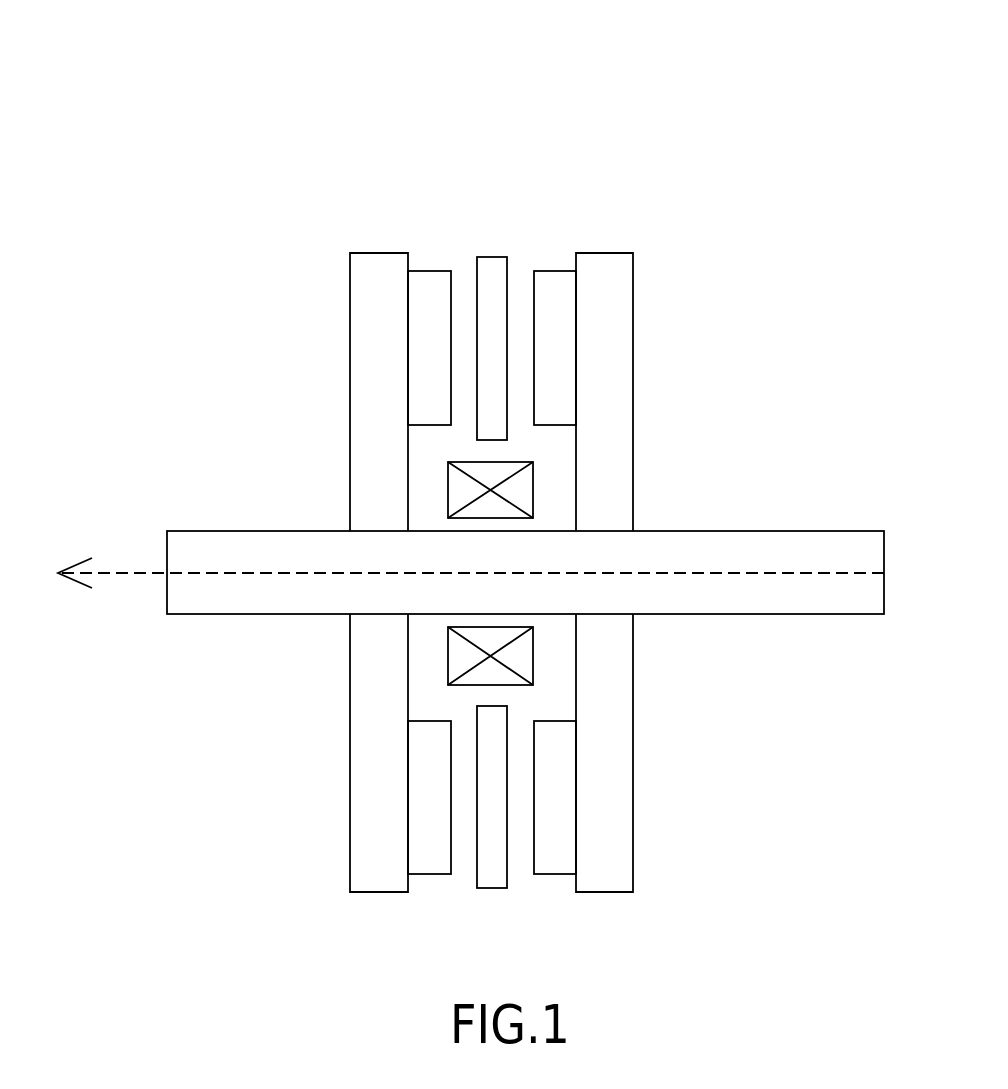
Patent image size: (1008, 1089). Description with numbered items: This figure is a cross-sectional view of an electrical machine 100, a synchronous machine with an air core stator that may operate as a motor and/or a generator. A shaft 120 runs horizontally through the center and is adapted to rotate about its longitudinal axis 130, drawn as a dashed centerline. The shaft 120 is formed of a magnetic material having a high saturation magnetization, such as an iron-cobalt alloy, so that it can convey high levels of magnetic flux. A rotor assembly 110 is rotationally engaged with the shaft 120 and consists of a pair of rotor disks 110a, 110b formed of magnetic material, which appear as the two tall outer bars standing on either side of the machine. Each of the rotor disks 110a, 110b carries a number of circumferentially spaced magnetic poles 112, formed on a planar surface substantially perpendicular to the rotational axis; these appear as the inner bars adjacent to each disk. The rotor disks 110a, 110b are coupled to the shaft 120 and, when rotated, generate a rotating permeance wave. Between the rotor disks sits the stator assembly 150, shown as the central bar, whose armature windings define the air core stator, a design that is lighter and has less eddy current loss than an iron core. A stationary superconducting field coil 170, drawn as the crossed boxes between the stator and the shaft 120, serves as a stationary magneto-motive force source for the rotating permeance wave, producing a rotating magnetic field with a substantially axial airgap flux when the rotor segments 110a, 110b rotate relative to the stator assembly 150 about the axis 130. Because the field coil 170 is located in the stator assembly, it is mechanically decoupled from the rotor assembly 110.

The electrical machine 100 is at (253, 322).
The rotor assembly 110 is at (682, 283).
The rotor disk 110a is at (378, 277).
The rotor disk 110b is at (607, 277).
The magnetic poles 112 is at (430, 292).
The shaft 120 is at (733, 600).
The longitudinal axis 130 is at (110, 573).
The stator assembly 150 is at (506, 198).
The stationary superconducting field coil 170 is at (518, 483).